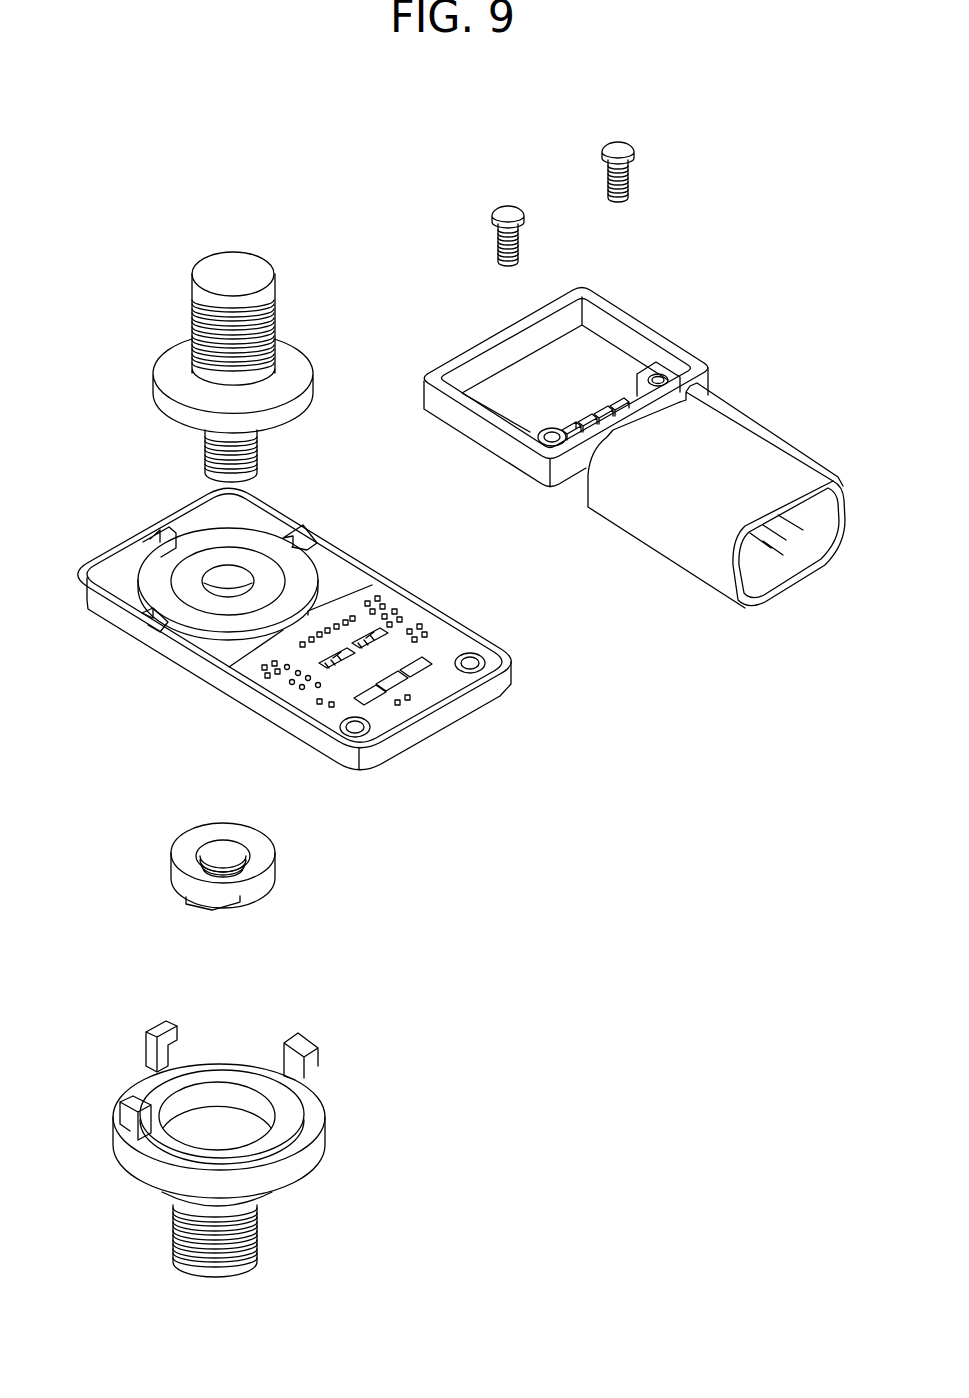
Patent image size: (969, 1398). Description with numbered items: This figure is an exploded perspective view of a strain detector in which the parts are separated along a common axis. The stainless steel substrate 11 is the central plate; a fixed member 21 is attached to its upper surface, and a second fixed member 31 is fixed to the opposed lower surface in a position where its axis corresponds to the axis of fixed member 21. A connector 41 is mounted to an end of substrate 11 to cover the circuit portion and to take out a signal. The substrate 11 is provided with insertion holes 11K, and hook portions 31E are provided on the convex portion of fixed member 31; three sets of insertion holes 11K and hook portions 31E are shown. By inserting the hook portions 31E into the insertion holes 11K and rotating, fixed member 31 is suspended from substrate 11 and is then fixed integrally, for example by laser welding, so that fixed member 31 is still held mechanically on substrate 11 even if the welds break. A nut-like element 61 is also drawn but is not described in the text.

The substrate 11 is at (177, 700).
The insertion holes 11K is at (163, 536).
The fixed member 21 is at (226, 267).
The second fixed member 31 is at (353, 1123).
The hook portions 31E is at (290, 1042).
The connector 41 is at (723, 430).
The nut 61 is at (268, 877).